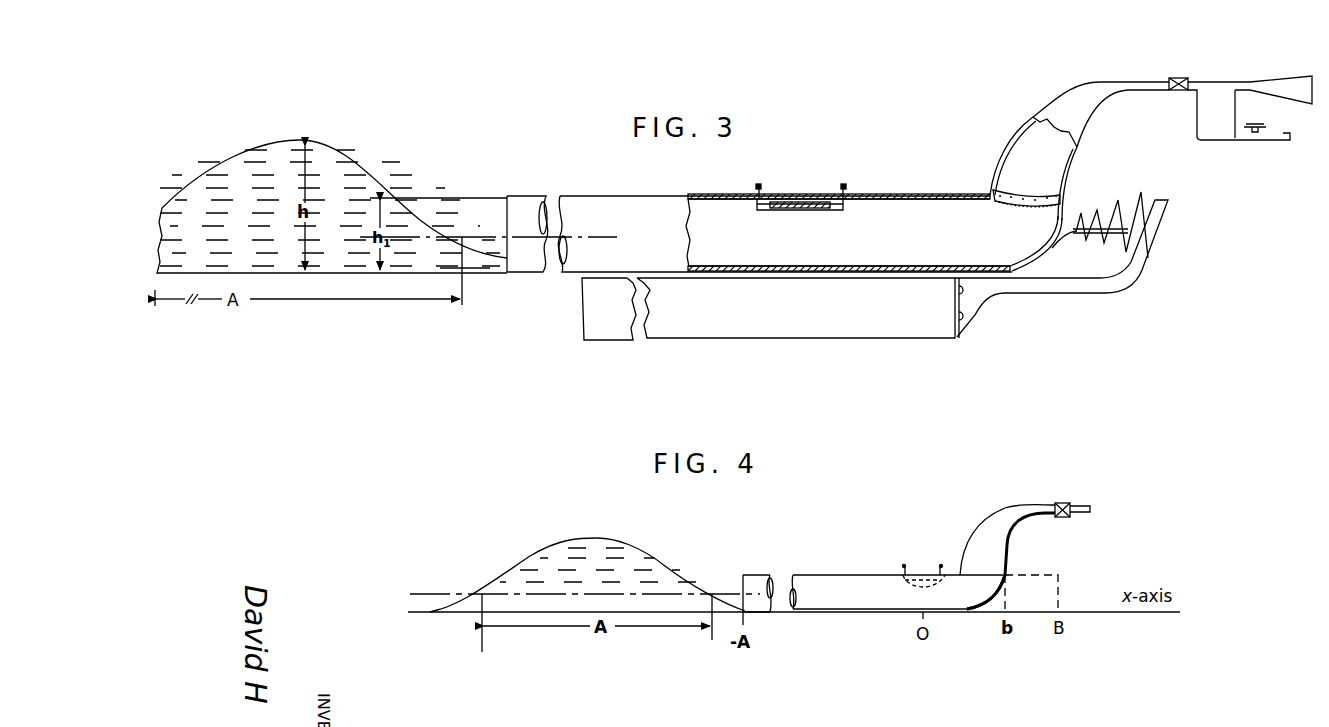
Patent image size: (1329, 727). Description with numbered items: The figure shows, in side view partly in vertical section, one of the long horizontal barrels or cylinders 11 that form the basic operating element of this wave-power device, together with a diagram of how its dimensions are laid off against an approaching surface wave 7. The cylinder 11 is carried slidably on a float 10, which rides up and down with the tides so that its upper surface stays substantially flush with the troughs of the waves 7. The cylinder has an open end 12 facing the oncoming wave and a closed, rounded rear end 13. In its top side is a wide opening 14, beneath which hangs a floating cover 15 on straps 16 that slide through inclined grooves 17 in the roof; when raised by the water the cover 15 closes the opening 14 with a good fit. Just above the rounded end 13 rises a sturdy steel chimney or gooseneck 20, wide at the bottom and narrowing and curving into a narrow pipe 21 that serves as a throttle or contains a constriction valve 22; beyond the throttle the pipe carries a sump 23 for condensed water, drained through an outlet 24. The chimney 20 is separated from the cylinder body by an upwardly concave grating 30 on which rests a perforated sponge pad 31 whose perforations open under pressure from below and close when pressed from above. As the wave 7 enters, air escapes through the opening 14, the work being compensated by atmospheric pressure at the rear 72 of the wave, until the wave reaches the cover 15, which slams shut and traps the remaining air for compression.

In FIG. 3, the wave 7 is at (380, 172).
In FIG. 4, the wave 7 is at (662, 558).
In FIG. 3, the float 10 is at (801, 318).
In FIG. 3, the horizontal barrel or cylinder 11 is at (596, 196).
In FIG. 4, the horizontal barrel or cylinder 11 is at (850, 574).
In FIG. 3, the open end 12 is at (507, 219).
In FIG. 3, the rear end 13 is at (1044, 250).
In FIG. 4, the rear end 13 is at (996, 598).
In FIG. 3, the opening 14 is at (799, 196).
In FIG. 4, the opening 14 is at (925, 573).
In FIG. 3, the cover 15 is at (800, 210).
In FIG. 3, the straps 16 is at (757, 206).
In FIG. 3, the inclined grooves 17 is at (757, 193).
In FIG. 3, the chimney or gooseneck 20 is at (1005, 146).
In FIG. 4, the chimney or gooseneck 20 is at (976, 535).
In FIG. 3, the pipe 21 is at (1128, 82).
In FIG. 3, the constriction valve 22 is at (1177, 78).
In FIG. 3, the sump 23 is at (1197, 114).
In FIG. 3, the outlet 24 is at (1269, 132).
In FIG. 3, the grating 30 is at (1034, 208).
In FIG. 3, the sponge or foam rubber pad 31 is at (1046, 192).
In FIG. 4, the rear of wave 72 is at (462, 604).